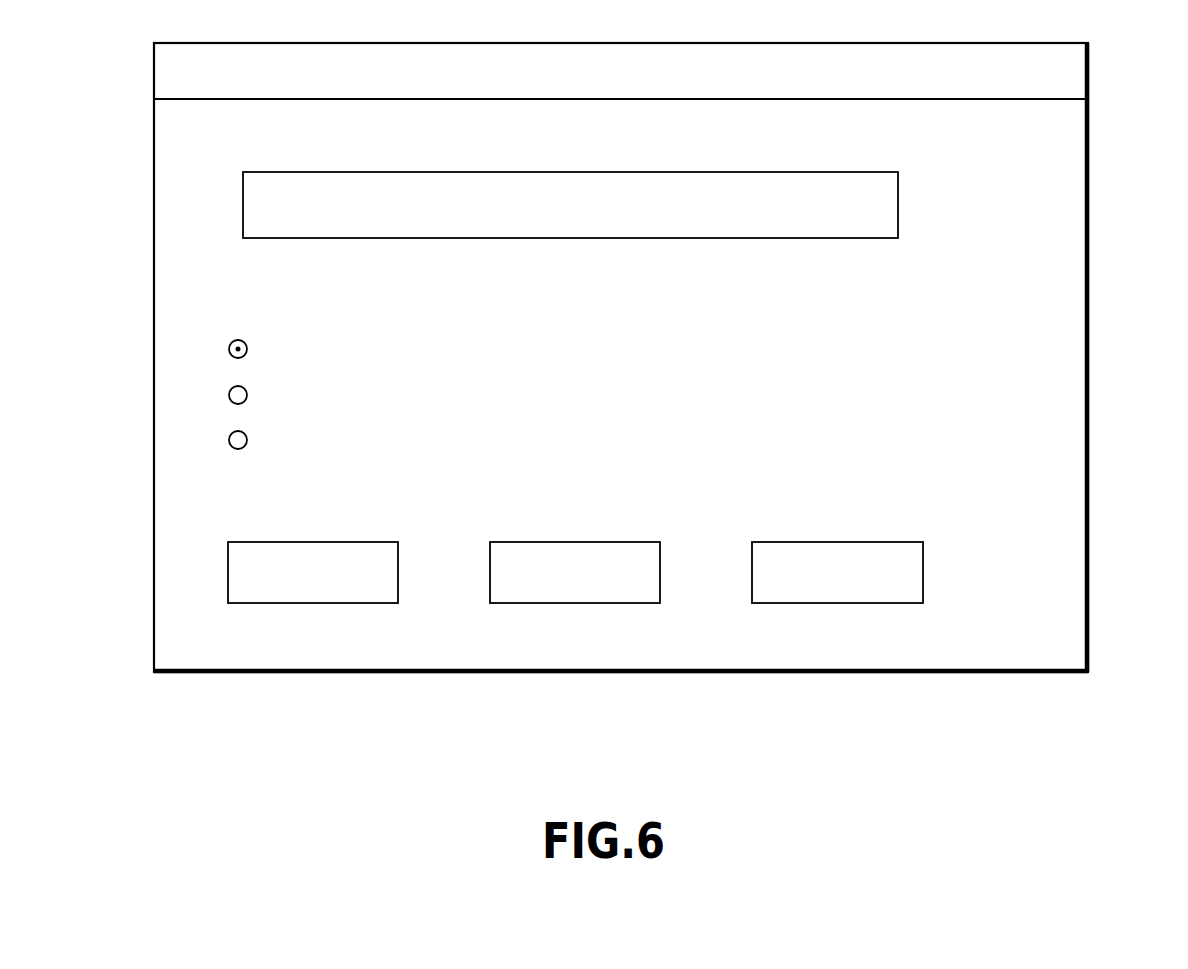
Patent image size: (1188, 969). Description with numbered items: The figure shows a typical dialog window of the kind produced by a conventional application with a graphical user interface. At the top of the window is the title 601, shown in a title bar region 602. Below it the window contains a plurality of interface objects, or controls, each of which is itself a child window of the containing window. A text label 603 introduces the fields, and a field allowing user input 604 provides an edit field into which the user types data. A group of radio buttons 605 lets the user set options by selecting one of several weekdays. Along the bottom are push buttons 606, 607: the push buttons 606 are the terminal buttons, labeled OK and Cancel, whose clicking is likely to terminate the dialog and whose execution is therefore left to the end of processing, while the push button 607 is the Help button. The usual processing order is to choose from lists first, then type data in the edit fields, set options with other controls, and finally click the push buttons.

The title 601 is at (925, 42).
The window title bar 602 is at (170, 68).
The text labels 603 is at (212, 302).
The field allowing user input 604 is at (900, 205).
The radio buttons 605 is at (212, 397).
The push buttons 606 is at (575, 605).
The push button 607 is at (838, 605).